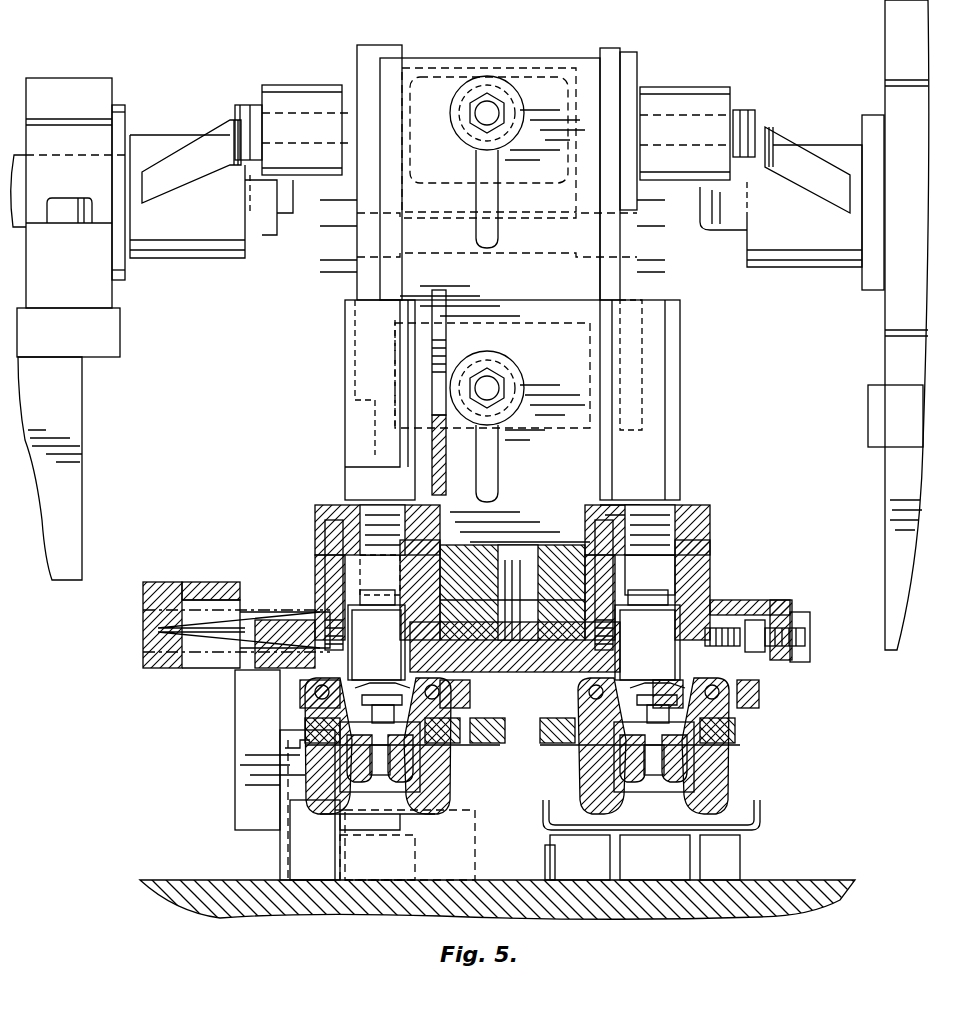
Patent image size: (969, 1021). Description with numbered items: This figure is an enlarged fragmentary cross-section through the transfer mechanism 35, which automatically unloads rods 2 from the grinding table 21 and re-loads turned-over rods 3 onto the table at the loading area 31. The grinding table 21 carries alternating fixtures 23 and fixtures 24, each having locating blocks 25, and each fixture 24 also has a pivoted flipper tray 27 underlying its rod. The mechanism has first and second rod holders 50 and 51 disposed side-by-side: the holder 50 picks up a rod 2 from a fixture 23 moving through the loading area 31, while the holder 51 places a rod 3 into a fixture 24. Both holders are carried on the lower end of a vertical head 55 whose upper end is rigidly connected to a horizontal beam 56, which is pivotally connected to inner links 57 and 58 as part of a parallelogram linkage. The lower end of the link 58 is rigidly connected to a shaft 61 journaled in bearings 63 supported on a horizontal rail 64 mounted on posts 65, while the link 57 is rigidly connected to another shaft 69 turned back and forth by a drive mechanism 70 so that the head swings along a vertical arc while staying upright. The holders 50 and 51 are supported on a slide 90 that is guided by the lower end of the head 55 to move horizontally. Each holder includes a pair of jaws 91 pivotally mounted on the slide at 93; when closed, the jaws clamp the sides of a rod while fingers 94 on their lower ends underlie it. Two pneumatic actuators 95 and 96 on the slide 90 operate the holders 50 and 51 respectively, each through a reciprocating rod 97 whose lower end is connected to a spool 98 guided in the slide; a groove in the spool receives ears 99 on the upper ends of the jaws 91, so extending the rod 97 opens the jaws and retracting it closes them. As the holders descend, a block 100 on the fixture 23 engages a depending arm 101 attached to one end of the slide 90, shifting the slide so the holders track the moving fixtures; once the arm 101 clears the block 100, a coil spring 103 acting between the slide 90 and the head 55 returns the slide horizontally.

The rod 2 is at (435, 780).
The rod 3 is at (720, 770).
The grinding table 21 is at (235, 920).
The fixture 23 is at (455, 832).
The fixture 24 is at (675, 910).
The locating block 25 is at (330, 885).
The flipper tray 27 is at (760, 826).
The loading area 31 is at (790, 848).
The transfer mechanism 35 is at (655, 40).
The rod holder 50 is at (300, 748).
The rod holder 51 is at (740, 720).
The head 55 is at (575, 352).
The beam 56 is at (528, 68).
The inner link 57 is at (790, 215).
The inner link 58 is at (218, 220).
The shaft 61 is at (120, 130).
The bearing 63 is at (45, 82).
The rail 64 is at (123, 330).
The post 65 is at (82, 432).
The shaft 69 is at (700, 205).
The drive mechanism 70 is at (882, 80).
The slide 90 is at (540, 625).
The jaw 91 is at (305, 730).
The pivot 93 is at (330, 668).
The finger 94 is at (400, 820).
The pneumatic actuator 95 is at (345, 360).
The pneumatic actuator 96 is at (685, 362).
The reciprocating rod 97 is at (365, 550).
The spool 98 is at (345, 590).
The ear 99 is at (390, 690).
The block 100 is at (280, 852).
The arm 101 is at (238, 808).
The coil spring 103 is at (195, 670).